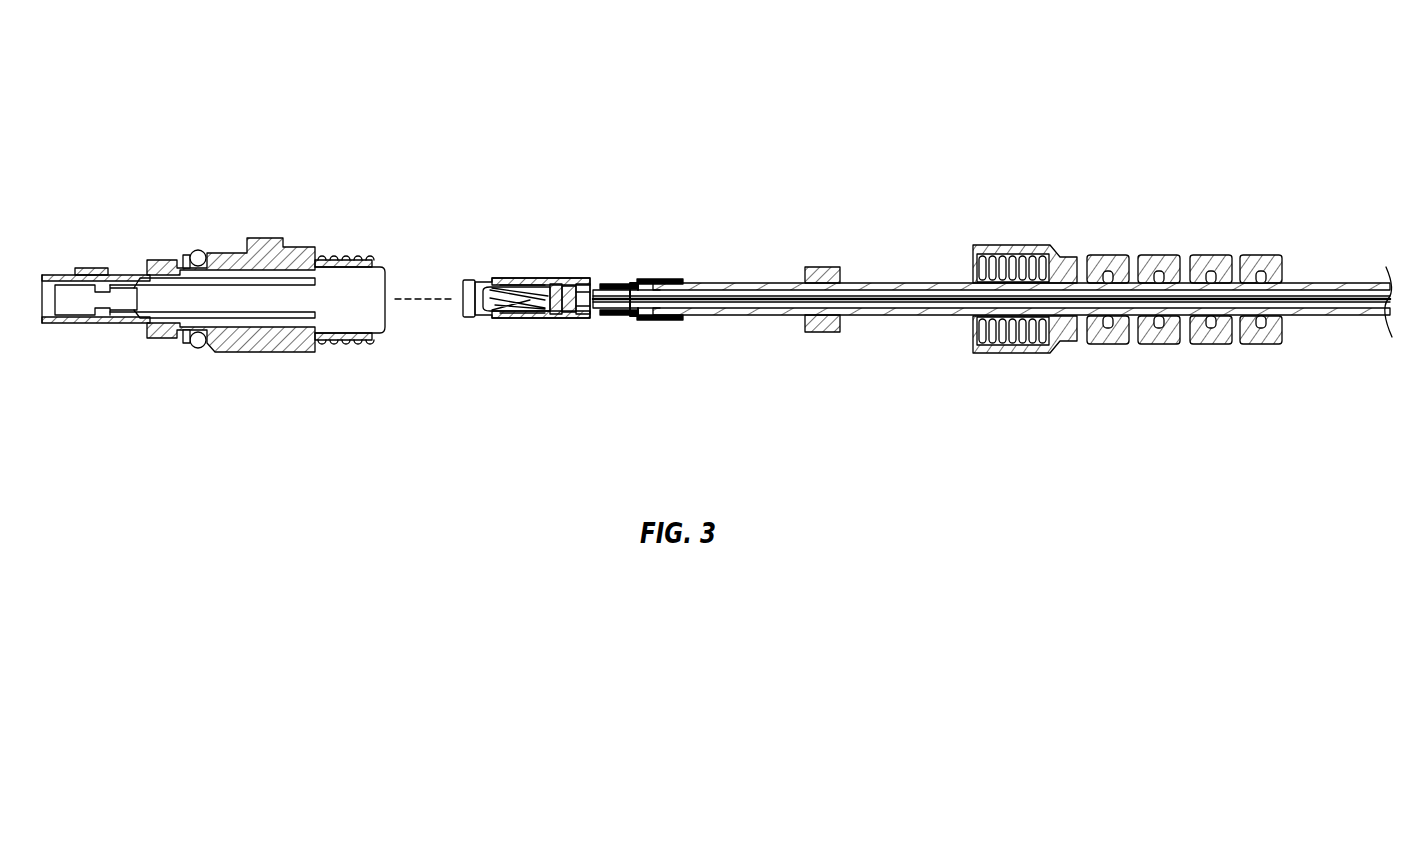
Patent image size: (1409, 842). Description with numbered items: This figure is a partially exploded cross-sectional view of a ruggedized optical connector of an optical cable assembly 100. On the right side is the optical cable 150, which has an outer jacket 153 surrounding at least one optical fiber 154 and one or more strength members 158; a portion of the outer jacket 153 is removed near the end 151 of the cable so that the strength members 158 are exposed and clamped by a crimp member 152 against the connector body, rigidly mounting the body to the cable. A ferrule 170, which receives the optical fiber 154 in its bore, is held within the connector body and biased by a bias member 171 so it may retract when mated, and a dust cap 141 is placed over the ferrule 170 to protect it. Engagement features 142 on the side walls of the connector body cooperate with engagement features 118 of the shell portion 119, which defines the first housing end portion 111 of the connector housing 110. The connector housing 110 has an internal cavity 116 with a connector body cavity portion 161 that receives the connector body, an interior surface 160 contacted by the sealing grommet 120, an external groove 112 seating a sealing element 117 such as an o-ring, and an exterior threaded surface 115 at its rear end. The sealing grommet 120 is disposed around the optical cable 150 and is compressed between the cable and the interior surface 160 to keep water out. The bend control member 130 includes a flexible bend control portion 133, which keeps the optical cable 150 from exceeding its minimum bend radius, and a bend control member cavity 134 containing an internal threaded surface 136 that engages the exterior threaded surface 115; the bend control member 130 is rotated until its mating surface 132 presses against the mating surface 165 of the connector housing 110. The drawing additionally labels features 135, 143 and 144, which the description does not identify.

The optical cable assembly 100 is at (506, 100).
The connector housing 110 is at (270, 184).
The first housing end portion 111 is at (98, 267).
The external groove 112 is at (185, 248).
The exterior threaded surface 115 is at (332, 336).
The internal cavity 116 is at (365, 287).
The sealing element 117 is at (201, 252).
The engagement features 118 is at (76, 303).
The shell portion 119 is at (57, 274).
The sealing grommet 120 is at (821, 265).
The bend control member 130 is at (1086, 238).
The mating surface 132 is at (972, 347).
The flexible bend control portion 133 is at (1235, 249).
The bend control member cavity 134 is at (1300, 274).
The boot inner passage 135 is at (973, 316).
The internal threaded surface 136 is at (1015, 258).
The dust cap 141 is at (474, 280).
The engagement features 142 is at (552, 273).
The ferrule holder 143 is at (596, 320).
The spring retainer 144 is at (560, 320).
The optical cable 150 is at (745, 268).
The end 151 is at (622, 270).
The crimp member 152 is at (647, 274).
The outer jacket 153 is at (895, 283).
The optical fiber 154 is at (937, 292).
The strength members 158 is at (637, 321).
The interior surface 160 is at (340, 278).
The connector body cavity portion 161 is at (237, 294).
The mating surface 165 is at (328, 256).
The ferrule 170 is at (490, 315).
The bias member 171 is at (550, 320).